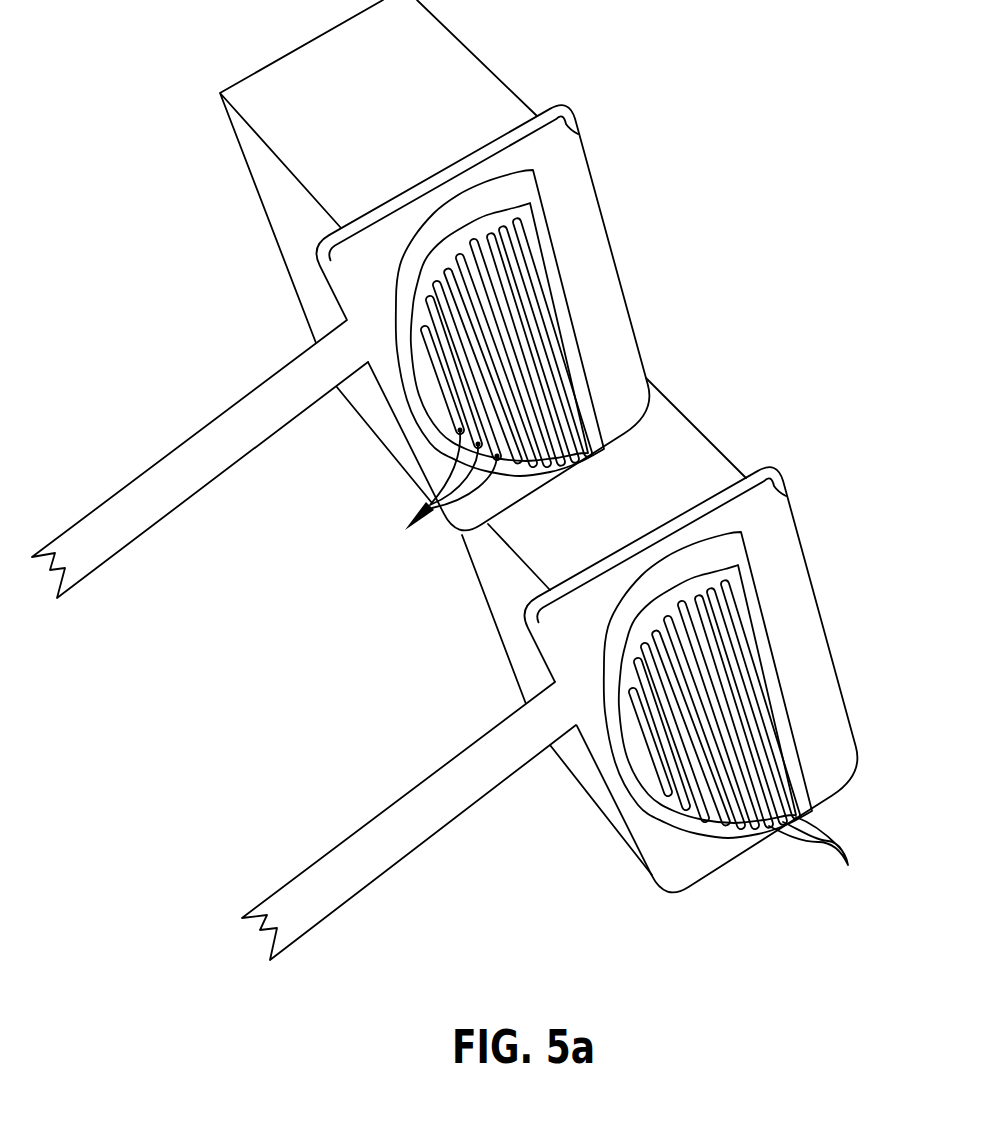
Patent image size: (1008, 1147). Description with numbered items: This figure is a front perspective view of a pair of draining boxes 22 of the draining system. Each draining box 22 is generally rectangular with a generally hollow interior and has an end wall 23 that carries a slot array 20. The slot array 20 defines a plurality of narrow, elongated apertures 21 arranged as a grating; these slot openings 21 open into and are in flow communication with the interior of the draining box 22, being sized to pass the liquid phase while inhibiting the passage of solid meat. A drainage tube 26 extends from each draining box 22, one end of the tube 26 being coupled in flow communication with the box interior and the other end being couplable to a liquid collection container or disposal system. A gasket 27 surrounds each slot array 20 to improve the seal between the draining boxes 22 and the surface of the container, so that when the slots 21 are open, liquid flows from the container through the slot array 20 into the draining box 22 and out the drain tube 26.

The slot array 20 is at (582, 352).
The apertures 21 is at (407, 530).
The draining box 22 is at (462, 88).
The end wall 23 is at (595, 250).
The drainage tube 26 is at (384, 811).
The gasket 27 is at (538, 180).